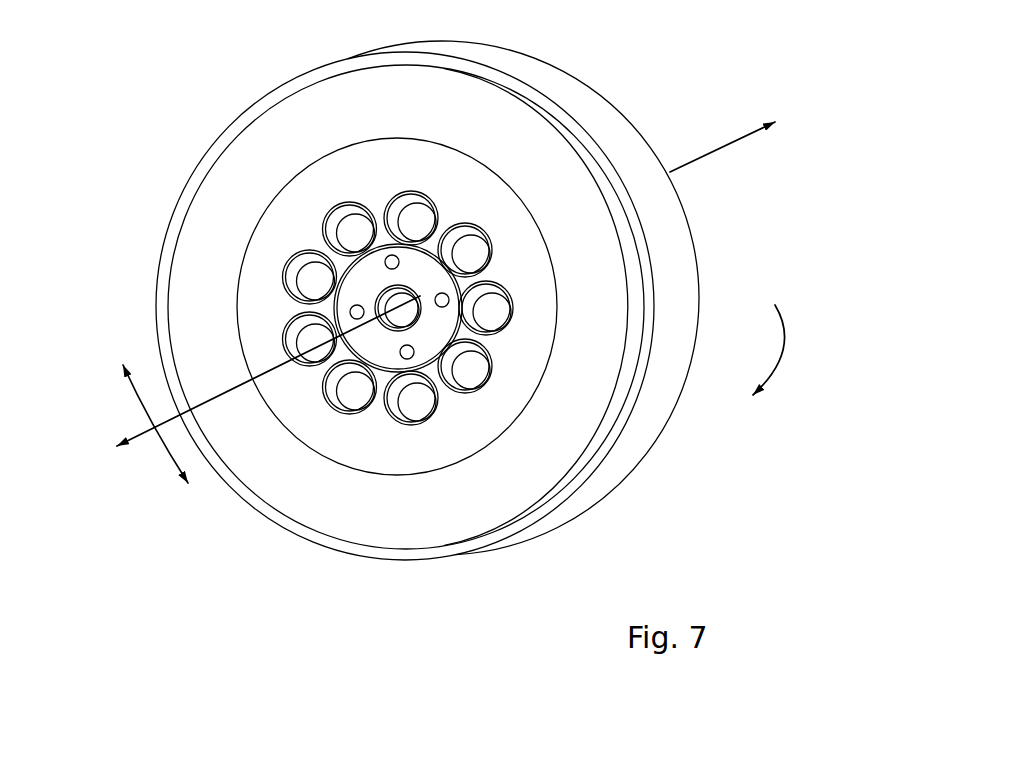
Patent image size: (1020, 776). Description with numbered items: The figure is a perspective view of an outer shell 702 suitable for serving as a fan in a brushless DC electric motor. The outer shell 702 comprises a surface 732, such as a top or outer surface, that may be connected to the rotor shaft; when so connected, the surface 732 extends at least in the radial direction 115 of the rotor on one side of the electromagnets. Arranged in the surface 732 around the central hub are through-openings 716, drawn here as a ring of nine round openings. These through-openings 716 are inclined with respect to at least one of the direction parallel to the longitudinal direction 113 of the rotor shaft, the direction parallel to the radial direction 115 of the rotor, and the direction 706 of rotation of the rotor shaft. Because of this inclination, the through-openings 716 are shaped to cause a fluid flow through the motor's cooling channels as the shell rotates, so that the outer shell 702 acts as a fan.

The outer shell 702 is at (152, 177).
The surface 732 is at (397, 286).
The through-openings 716 is at (483, 372).
The longitudinal direction 113 is at (767, 130).
The radial direction 115 is at (147, 405).
The direction of rotation 706 is at (782, 363).